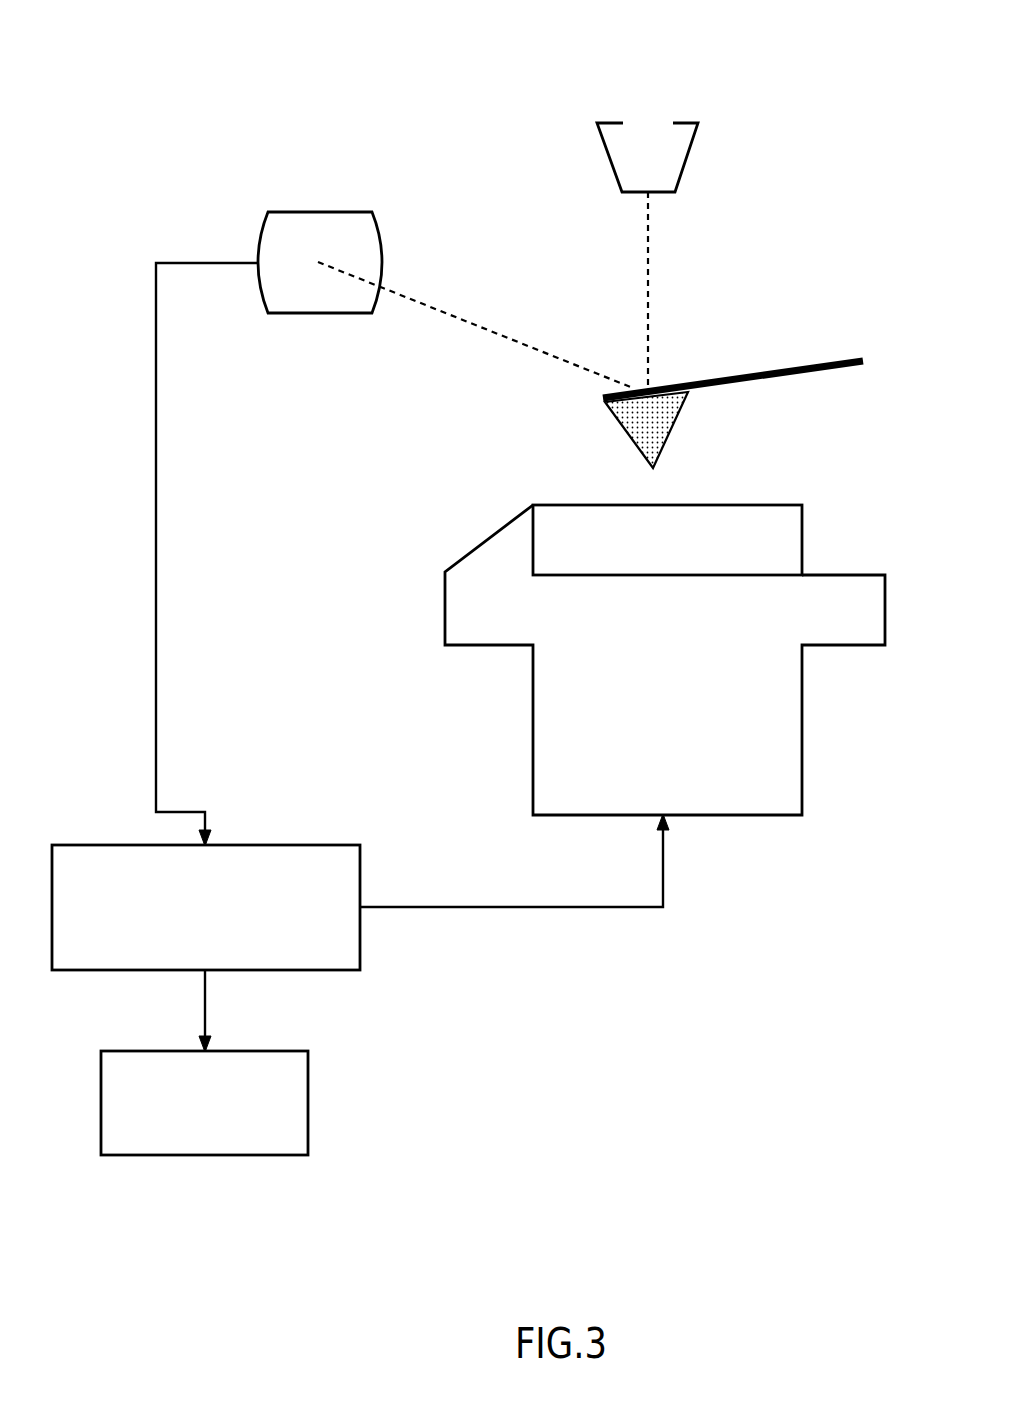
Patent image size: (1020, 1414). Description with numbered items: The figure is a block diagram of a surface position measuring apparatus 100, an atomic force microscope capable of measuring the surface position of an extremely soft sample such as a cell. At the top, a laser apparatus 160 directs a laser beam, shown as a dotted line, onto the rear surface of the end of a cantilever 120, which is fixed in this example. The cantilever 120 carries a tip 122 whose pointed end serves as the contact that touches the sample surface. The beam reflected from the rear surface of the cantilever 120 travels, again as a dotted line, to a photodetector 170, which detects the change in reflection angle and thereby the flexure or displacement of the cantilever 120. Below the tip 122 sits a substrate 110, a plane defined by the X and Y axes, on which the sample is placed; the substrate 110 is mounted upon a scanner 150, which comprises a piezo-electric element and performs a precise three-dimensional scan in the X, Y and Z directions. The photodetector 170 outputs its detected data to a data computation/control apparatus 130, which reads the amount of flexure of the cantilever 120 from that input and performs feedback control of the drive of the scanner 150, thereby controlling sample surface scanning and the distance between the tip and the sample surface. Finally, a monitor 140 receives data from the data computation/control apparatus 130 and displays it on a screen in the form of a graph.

The surface position measuring apparatus 100 is at (487, 78).
The substrate 110 is at (748, 503).
The cantilever 120 is at (733, 375).
The tip 122 is at (630, 436).
The data computation/control apparatus 130 is at (290, 843).
The monitor 140 is at (268, 1050).
The scanner 150 is at (805, 727).
The laser apparatus 160 is at (673, 125).
The photodetector 170 is at (322, 212).